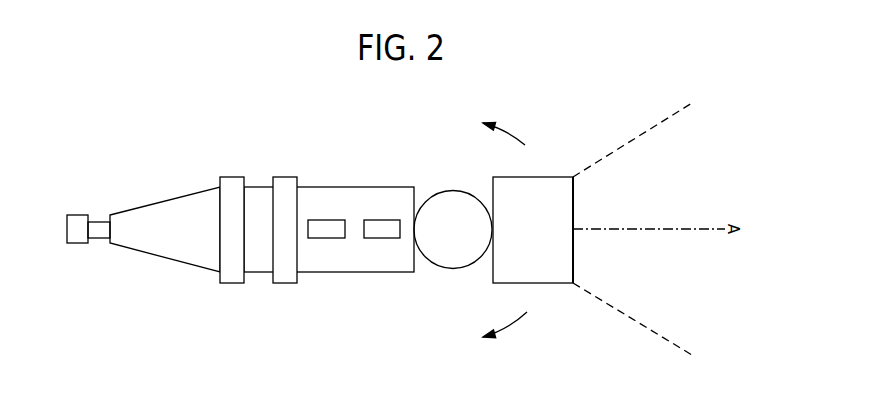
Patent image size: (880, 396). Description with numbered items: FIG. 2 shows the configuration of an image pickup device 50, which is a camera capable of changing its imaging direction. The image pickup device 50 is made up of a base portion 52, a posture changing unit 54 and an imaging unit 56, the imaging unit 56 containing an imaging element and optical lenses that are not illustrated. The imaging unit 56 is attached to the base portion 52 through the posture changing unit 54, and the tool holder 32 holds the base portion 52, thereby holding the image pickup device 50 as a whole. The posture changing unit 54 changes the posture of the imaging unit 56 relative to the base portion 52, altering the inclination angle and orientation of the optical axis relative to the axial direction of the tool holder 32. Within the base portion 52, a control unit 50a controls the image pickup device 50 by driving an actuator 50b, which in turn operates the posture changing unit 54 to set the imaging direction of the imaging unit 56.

The tool holder 32 is at (232, 270).
The image pickup device 50 is at (562, 292).
The control unit 50a is at (326, 220).
The actuator 50b is at (383, 220).
The base portion 52 is at (360, 272).
The posture changing unit 54 is at (447, 249).
The imaging unit 56 is at (573, 252).